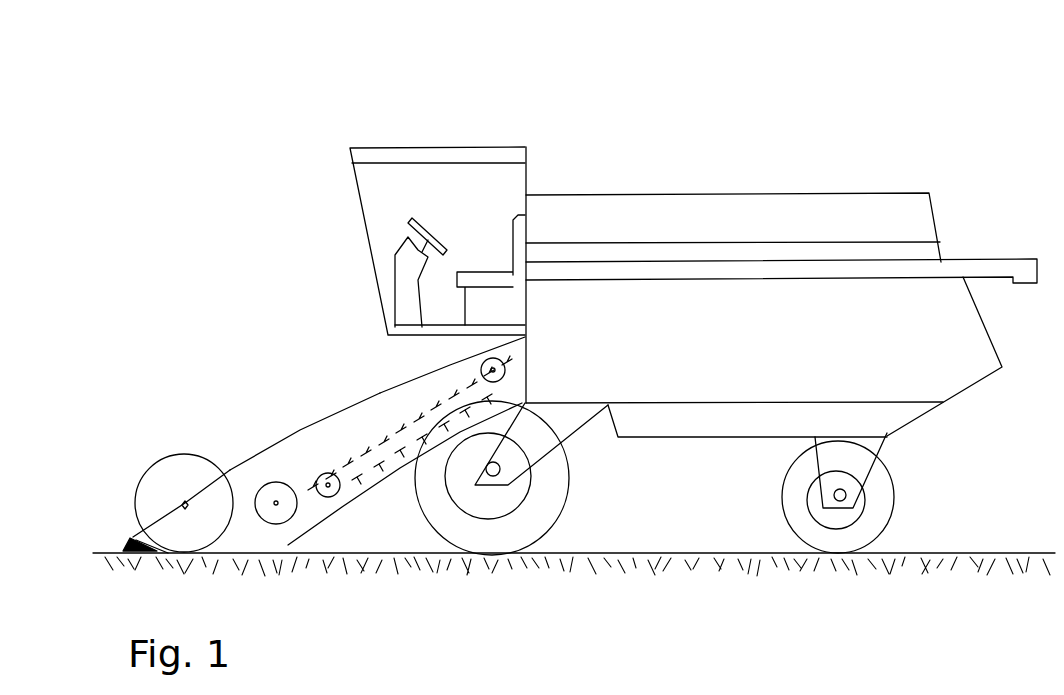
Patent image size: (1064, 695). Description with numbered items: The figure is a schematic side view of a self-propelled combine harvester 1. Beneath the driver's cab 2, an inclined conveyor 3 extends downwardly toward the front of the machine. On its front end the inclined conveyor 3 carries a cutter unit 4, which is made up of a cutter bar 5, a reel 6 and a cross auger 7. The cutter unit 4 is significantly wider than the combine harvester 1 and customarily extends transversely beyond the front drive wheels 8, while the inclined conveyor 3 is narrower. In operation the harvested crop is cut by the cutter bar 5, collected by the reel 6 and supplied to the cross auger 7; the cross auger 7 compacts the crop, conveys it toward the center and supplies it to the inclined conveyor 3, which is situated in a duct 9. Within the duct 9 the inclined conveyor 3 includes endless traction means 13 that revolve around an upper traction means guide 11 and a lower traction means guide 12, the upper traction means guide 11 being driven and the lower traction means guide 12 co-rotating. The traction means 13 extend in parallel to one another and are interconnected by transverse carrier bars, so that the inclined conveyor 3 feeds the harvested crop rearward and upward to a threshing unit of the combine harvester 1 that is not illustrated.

The combine harvester 1 is at (857, 70).
The driver's cab 2 is at (466, 161).
The inclined conveyor 3 is at (322, 375).
The cutter unit 4 is at (137, 435).
The cutter bar 5 is at (130, 545).
The reel 6 is at (176, 462).
The cross auger 7 is at (275, 487).
The front drive wheels 8 is at (493, 538).
The duct 9 is at (290, 425).
The upper traction means guide 11 is at (488, 368).
The lower traction means guide 12 is at (323, 498).
The traction means 13 is at (360, 482).